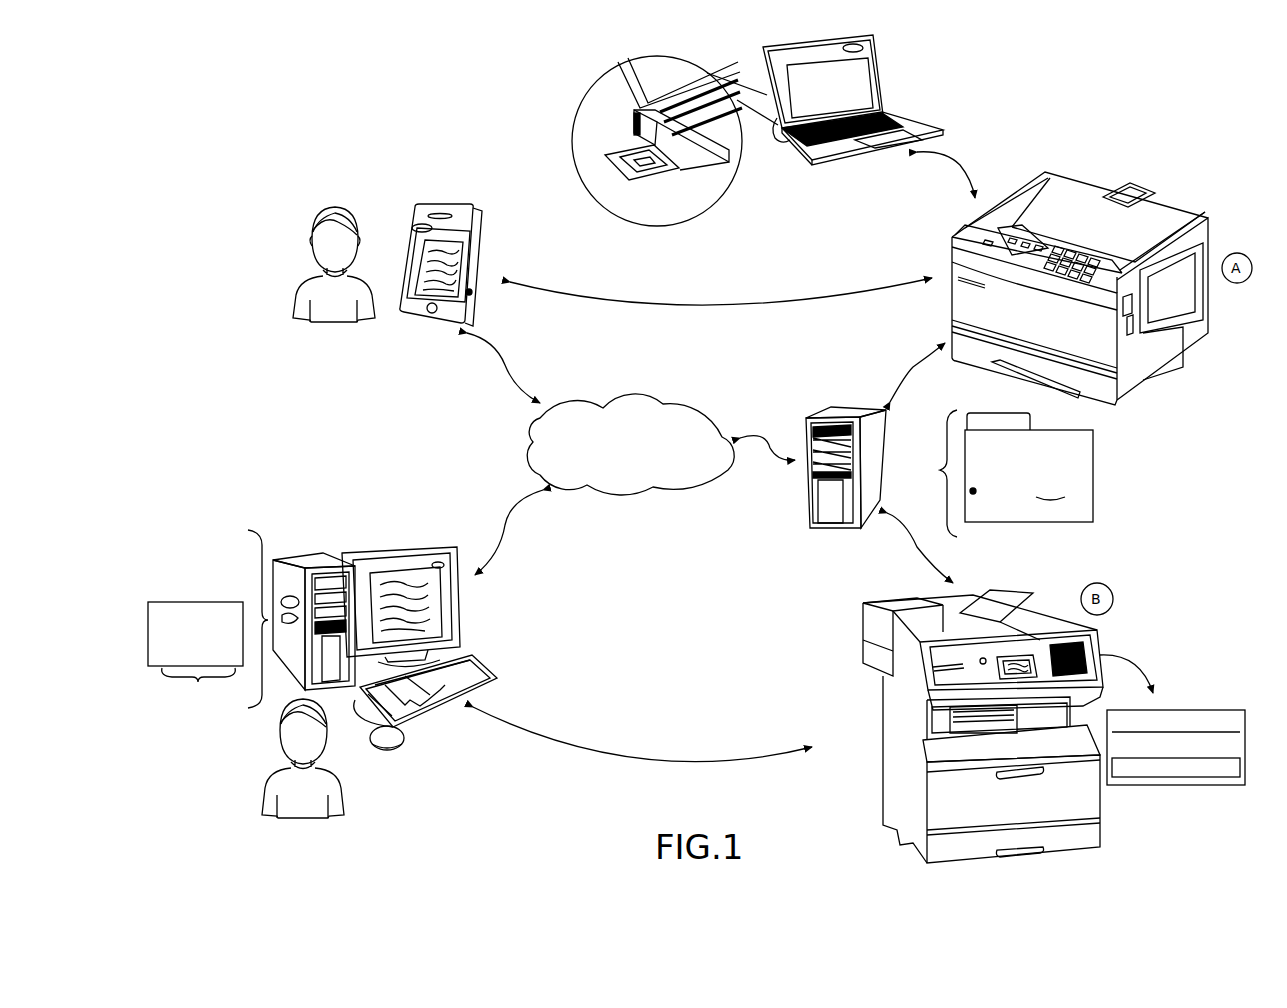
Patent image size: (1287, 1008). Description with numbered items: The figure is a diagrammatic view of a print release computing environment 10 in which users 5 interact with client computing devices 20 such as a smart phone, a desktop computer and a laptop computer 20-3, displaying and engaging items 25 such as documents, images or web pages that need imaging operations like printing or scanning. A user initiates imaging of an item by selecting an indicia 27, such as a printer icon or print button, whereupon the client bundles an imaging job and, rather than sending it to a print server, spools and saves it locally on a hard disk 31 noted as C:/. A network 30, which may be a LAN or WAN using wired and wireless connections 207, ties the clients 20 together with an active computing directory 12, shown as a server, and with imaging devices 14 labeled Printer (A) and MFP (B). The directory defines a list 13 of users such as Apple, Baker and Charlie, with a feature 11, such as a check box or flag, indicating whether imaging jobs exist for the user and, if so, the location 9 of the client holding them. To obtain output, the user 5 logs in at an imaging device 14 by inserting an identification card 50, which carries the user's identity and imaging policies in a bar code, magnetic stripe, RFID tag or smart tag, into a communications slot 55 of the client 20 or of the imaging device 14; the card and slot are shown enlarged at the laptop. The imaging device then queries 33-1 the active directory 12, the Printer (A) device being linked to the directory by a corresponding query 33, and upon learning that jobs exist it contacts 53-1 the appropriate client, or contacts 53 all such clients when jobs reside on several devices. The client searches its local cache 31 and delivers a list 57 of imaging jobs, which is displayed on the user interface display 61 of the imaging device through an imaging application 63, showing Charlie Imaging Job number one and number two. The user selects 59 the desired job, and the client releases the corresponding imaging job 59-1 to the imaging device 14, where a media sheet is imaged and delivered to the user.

The print release computing environment 10 is at (443, 121).
The user 5 is at (293, 316).
The client computing device 20 is at (472, 207).
The client computing device 20-3 is at (763, 80).
The item 25 is at (870, 88).
The indicia 27 is at (870, 46).
The identification card 50 is at (690, 170).
The communications slot 55 is at (655, 155).
The contact with client devices 53 is at (962, 160).
The contact with client device 53-1 is at (670, 757).
The network connection 207 is at (512, 362).
The network 30 is at (682, 397).
The active computing directory 12 is at (883, 472).
The server to imaging device link 33 is at (913, 367).
The query to active directory 33-1 is at (920, 550).
The list of users 13 is at (1037, 481).
The feature 11 is at (975, 496).
The client location 9 is at (1050, 498).
The imaging device 14 is at (1035, 519).
The user interface display 61 is at (1038, 245).
The imaging application 63 is at (1012, 237).
The list of imaging jobs 57 is at (696, 713).
The selection of imaging job 59 is at (1145, 779).
The selected imaging job 59-1 is at (148, 645).
The local cache 31 is at (211, 516).